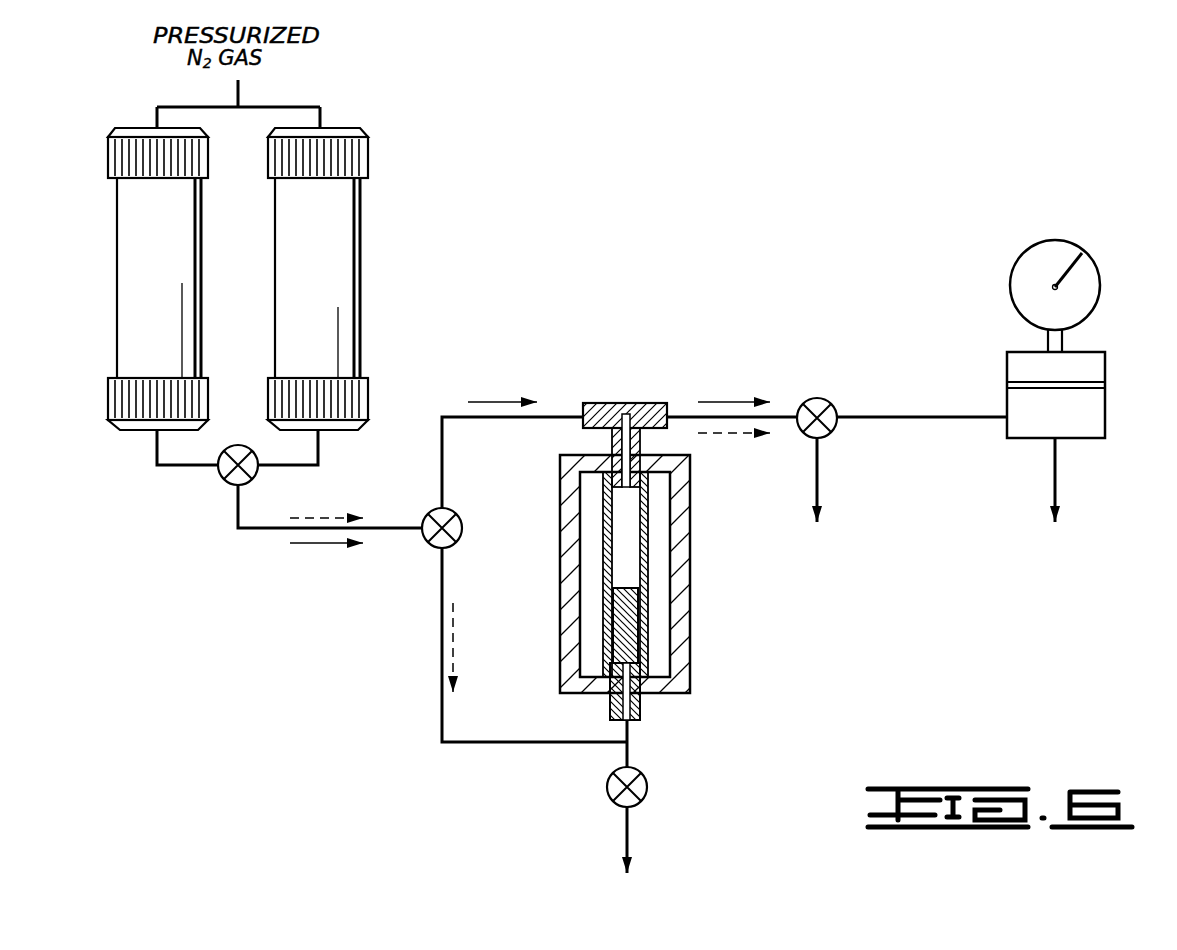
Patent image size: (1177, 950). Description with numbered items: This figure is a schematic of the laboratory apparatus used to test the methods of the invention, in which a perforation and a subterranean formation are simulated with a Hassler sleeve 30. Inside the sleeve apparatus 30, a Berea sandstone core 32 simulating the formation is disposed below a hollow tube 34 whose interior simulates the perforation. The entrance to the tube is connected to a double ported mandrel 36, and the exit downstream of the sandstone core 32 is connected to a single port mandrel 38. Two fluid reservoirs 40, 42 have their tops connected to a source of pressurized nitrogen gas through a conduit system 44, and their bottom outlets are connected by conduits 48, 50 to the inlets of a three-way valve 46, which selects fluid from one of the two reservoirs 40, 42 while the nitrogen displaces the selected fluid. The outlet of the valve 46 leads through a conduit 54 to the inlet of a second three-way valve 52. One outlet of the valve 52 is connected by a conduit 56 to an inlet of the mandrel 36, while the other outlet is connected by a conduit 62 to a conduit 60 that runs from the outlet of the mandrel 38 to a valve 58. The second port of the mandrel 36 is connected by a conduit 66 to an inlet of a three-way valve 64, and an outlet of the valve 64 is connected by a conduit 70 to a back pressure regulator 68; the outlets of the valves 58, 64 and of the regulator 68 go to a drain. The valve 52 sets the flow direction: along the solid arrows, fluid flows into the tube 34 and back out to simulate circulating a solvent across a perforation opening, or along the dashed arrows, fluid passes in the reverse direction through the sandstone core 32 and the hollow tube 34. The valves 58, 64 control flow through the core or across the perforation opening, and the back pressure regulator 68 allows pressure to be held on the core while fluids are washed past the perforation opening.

The Hassler sleeve 30 is at (659, 563).
The Berea sandstone core 32 is at (628, 632).
The hollow tube 34 is at (650, 518).
The double ported mandrel 36 is at (640, 438).
The single port mandrel 38 is at (640, 710).
The fluid reservoir 40 is at (335, 255).
The fluid reservoir 42 is at (187, 255).
The conduit system 44 is at (305, 99).
The three-way valve 46 is at (228, 483).
The conduit 48 is at (305, 468).
The conduit 50 is at (177, 468).
The three-way valve 52 is at (460, 520).
The conduit 54 is at (257, 533).
The conduit 56 is at (485, 420).
The valve 58 is at (637, 784).
The conduit 60 is at (628, 733).
The conduit 62 is at (500, 745).
The three-way valve 64 is at (823, 398).
The conduit 66 is at (785, 415).
The back pressure regulator 68 is at (1085, 412).
The conduit 70 is at (917, 415).